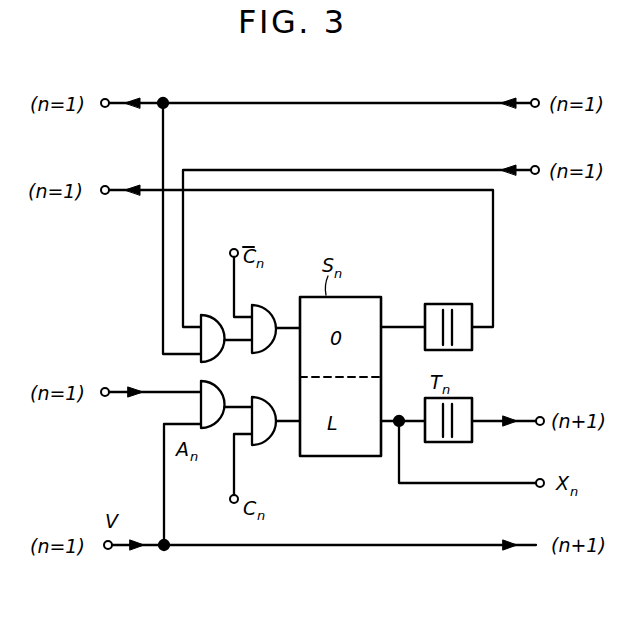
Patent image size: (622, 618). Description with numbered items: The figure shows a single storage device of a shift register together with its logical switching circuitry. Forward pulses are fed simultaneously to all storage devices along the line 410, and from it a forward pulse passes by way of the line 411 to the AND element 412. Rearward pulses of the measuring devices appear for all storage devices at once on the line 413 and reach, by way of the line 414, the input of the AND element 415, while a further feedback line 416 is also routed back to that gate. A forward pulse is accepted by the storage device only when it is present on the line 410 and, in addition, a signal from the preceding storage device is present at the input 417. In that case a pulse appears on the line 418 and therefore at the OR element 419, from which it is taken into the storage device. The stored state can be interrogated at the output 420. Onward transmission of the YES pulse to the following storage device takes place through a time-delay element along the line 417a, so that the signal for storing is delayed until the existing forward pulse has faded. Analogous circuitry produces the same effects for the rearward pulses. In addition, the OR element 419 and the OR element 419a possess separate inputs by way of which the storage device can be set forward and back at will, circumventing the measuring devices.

The line 410 is at (252, 550).
The line 411 is at (165, 481).
The AND element 412 is at (197, 385).
The line 413 is at (316, 100).
The line 414 is at (163, 258).
The AND element 415 is at (204, 312).
The feedback line 416 is at (362, 168).
The input from preceding storage device 417 is at (145, 400).
The line 417a is at (520, 417).
The line 418 is at (236, 404).
The OR element 419 is at (283, 454).
The OR element 419a is at (270, 316).
The interrogation output 420 is at (458, 486).